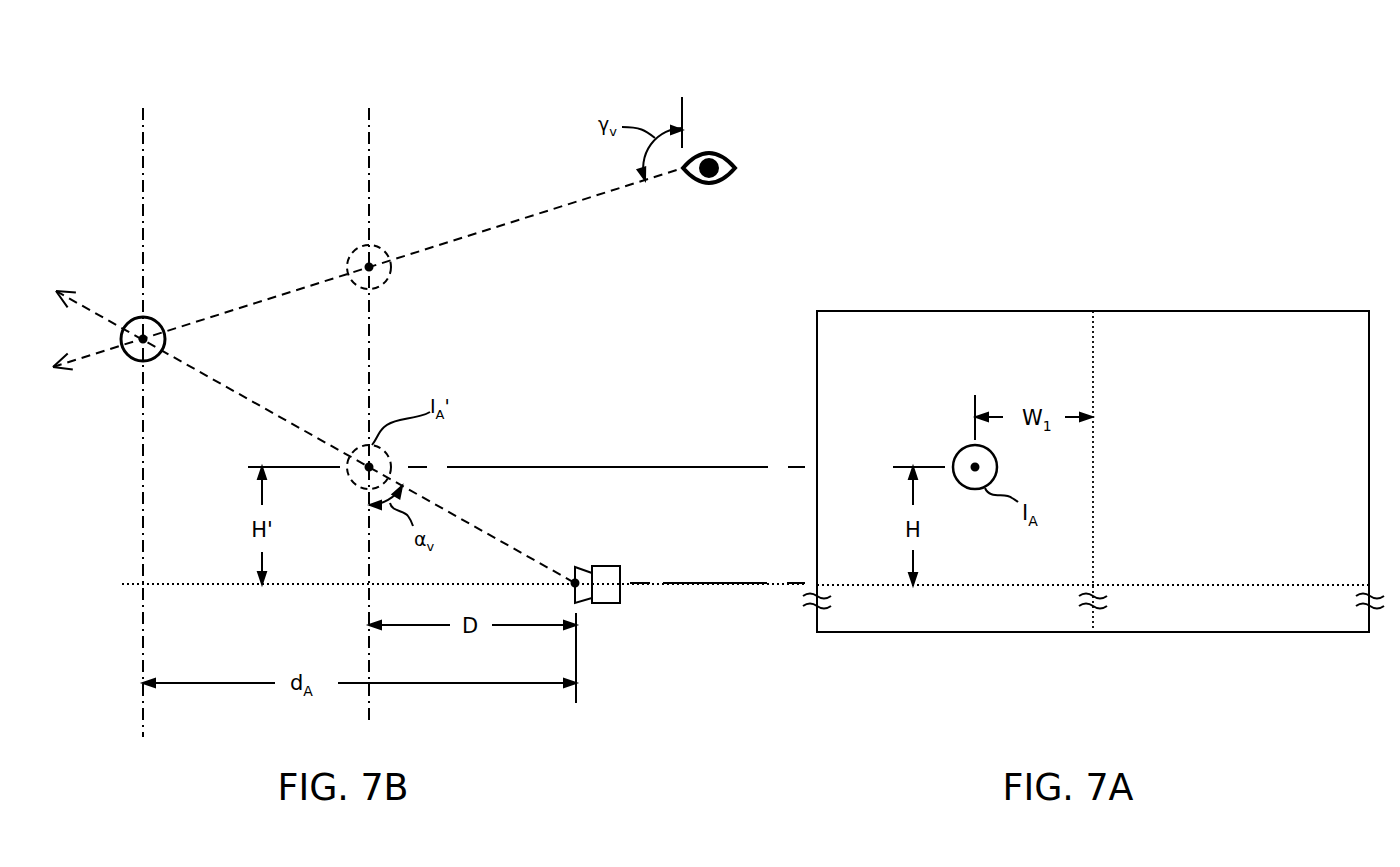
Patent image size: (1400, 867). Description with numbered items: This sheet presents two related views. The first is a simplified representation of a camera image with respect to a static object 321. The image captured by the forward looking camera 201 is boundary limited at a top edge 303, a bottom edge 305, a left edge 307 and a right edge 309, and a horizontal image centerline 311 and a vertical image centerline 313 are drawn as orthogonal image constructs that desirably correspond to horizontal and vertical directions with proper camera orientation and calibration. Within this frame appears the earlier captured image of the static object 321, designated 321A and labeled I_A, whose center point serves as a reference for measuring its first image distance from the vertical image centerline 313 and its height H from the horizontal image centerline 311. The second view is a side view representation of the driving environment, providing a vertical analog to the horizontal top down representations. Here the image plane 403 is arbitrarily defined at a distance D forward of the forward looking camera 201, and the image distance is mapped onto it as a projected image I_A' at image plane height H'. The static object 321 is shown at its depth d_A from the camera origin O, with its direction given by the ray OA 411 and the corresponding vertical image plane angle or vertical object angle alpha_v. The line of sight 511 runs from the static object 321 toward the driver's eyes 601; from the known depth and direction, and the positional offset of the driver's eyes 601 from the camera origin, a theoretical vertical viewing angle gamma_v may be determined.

In FIG. 7B, the forward looking camera 201 is at (620, 575).
In FIG. 7A, the top edge 303 is at (1180, 310).
In FIG. 7A, the bottom edge 305 is at (1205, 632).
In FIG. 7A, the left edge 307 is at (817, 415).
In FIG. 7A, the right edge 309 is at (1369, 400).
In FIG. 7B, the horizontal image centerline 311 is at (318, 584).
In FIG. 7A, the horizontal image centerline 311 is at (1140, 585).
In FIG. 7A, the vertical image centerline 313 is at (1093, 363).
In FIG. 7B, the static object 321 is at (155, 287).
In FIG. 7A, the static object 321 is at (922, 416).
In FIG. 7B, the earlier captured image of static object 321A is at (153, 320).
In FIG. 7A, the earlier captured image of static object 321A is at (952, 428).
In FIG. 7B, the image plane 403 is at (369, 140).
In FIG. 7B, the ray OA 411 is at (505, 543).
In FIG. 7B, the viewer line of sight 511 is at (435, 247).
In FIG. 7B, the driver's eyes 601 is at (742, 154).